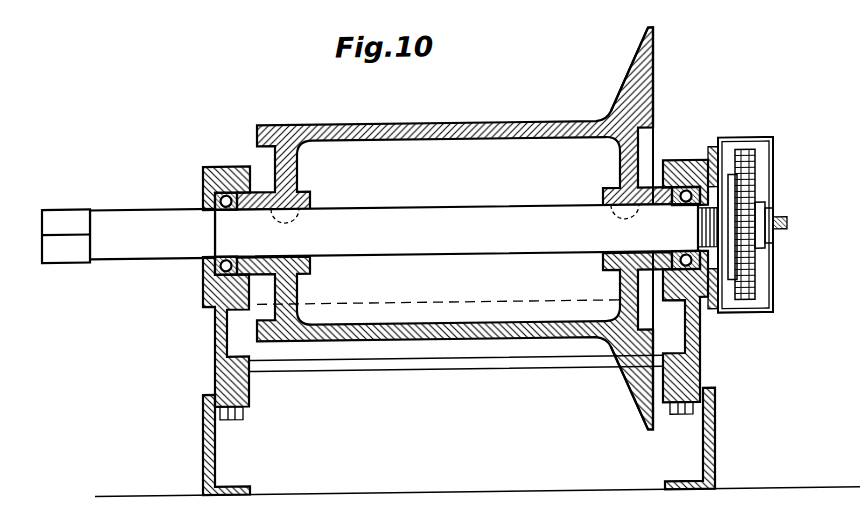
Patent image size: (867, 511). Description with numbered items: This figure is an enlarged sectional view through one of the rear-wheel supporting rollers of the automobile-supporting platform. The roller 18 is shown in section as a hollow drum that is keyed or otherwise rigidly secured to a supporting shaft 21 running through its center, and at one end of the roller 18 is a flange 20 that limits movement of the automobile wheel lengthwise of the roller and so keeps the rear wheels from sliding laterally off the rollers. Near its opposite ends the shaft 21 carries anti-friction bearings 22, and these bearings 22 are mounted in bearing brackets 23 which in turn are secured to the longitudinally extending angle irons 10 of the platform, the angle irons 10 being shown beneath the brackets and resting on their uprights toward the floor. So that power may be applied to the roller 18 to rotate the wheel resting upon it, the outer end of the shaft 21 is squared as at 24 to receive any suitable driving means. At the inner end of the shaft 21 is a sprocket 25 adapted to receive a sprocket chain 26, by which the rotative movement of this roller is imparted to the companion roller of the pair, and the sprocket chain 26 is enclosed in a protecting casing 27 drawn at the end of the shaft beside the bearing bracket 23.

The angle irons 10 is at (203, 436).
The roller 18 is at (513, 124).
The flange 20 is at (633, 61).
The supporting shaft 21 is at (440, 208).
The anti-friction bearings 22 is at (692, 197).
The bearing brackets 23 is at (203, 172).
The squared outer end 24 is at (70, 259).
The sprocket 25 is at (753, 192).
The sprocket chain 26 is at (758, 299).
The protecting casing 27 is at (745, 142).